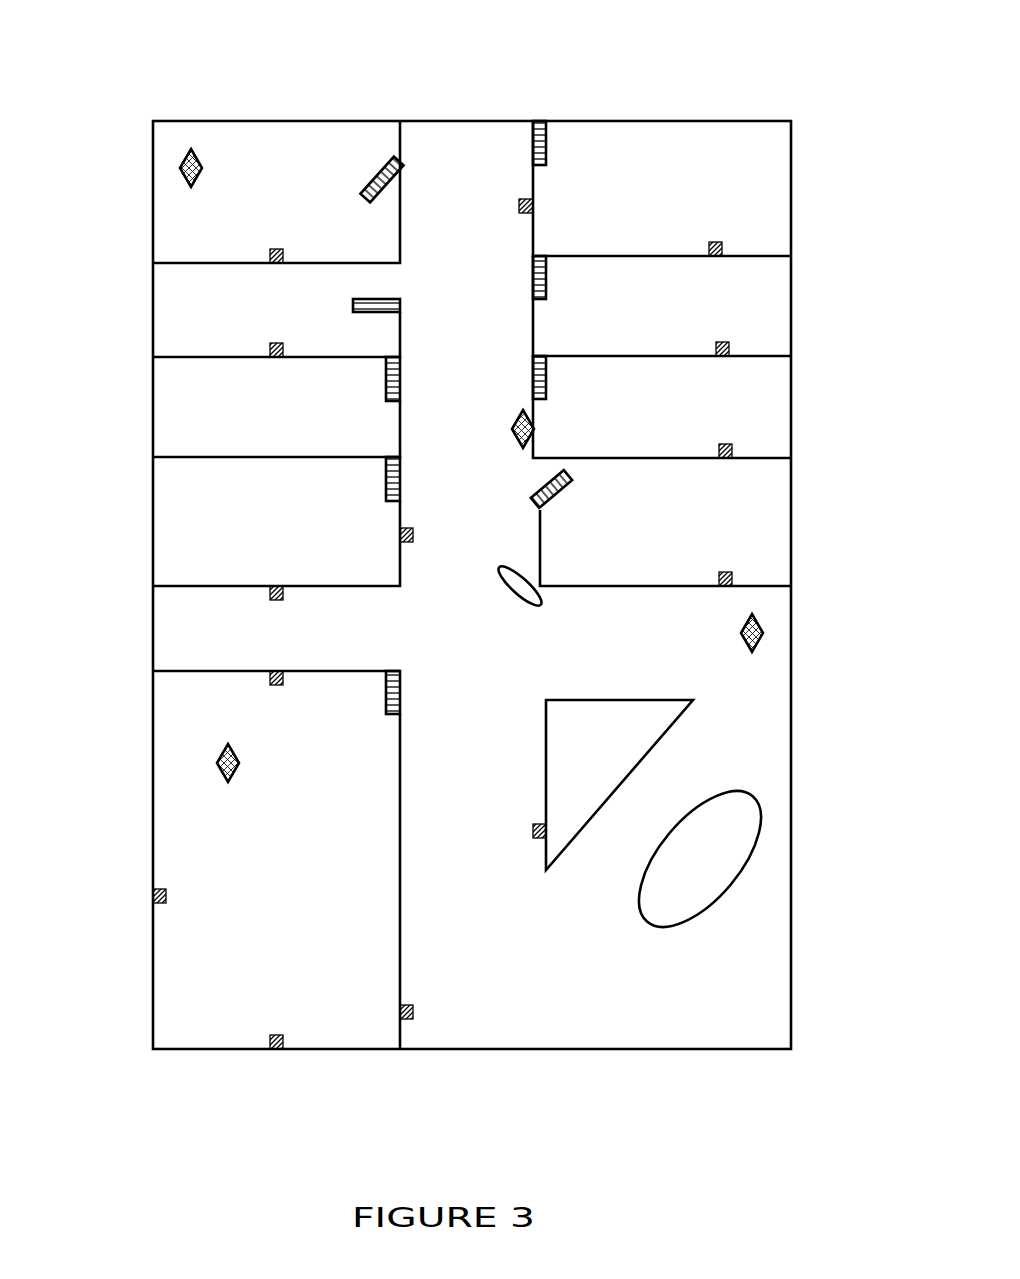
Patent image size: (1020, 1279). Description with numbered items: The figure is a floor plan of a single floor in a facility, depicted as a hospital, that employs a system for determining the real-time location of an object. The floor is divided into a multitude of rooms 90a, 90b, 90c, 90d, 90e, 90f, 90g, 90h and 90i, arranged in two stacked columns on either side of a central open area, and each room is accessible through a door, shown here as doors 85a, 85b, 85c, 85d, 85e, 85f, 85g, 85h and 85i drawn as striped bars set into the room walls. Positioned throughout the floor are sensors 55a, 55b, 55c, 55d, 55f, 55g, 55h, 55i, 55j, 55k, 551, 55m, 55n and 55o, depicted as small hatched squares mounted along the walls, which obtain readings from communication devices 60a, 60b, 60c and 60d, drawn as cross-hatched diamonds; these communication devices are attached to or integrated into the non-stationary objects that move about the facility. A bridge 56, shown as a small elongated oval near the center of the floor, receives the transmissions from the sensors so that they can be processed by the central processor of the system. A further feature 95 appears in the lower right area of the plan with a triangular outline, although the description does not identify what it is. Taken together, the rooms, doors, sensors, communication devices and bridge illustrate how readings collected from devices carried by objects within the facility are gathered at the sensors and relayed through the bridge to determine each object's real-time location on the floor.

The room 90a is at (258, 170).
The room 90b is at (635, 168).
The room 90c is at (222, 280).
The room 90d is at (638, 318).
The room 90e is at (227, 398).
The room 90f is at (642, 422).
The room 90g is at (227, 483).
The room 90h is at (660, 487).
The room 90i is at (243, 820).
The door 85a is at (392, 158).
The door 85b is at (546, 133).
The door 85c is at (353, 309).
The door 85d is at (546, 273).
The door 85e is at (386, 380).
The door 85f is at (548, 385).
The door 85g is at (386, 478).
The door 85h is at (555, 498).
The door 85i is at (386, 692).
The sensor 55a is at (270, 250).
The sensor 55b is at (720, 243).
The sensor 55c is at (268, 357).
The sensor 55d is at (732, 343).
The sensor 55f is at (732, 444).
The sensor 55g is at (270, 599).
The sensor 55h is at (732, 570).
The sensor 55i is at (270, 671).
The sensor 55j is at (400, 530).
The sensor 55k is at (153, 889).
The sensor 551 is at (270, 1036).
The sensor 55m is at (412, 1019).
The sensor 55n is at (546, 829).
The sensor 55o is at (522, 198).
The communication device 60a is at (180, 168).
The communication device 60b is at (516, 413).
The communication device 60c is at (217, 763).
The communication device 60d is at (763, 636).
The bridge 56 is at (540, 602).
The obstacle 95 is at (718, 750).